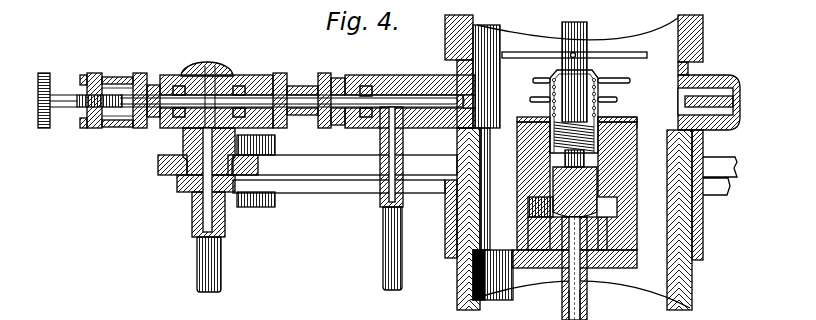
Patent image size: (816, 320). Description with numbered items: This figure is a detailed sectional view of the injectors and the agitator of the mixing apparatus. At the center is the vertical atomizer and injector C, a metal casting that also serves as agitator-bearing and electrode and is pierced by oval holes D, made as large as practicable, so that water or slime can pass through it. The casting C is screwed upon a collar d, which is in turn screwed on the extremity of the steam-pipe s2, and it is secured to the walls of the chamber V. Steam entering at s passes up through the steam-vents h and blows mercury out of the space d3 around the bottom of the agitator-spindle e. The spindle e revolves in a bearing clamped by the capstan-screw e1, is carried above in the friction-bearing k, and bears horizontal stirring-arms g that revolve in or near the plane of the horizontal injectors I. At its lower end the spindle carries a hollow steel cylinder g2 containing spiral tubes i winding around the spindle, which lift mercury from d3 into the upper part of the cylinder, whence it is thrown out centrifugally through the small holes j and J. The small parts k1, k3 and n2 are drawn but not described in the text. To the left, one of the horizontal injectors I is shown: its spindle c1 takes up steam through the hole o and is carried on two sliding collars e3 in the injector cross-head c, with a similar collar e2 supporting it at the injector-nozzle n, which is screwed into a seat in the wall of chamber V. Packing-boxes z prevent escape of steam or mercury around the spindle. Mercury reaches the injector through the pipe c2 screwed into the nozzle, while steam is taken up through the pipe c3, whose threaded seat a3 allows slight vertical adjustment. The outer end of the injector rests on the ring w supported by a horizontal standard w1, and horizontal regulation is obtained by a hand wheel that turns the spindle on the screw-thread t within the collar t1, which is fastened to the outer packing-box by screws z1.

The horizontal standard w1 is at (38, 100).
The screw-thread t is at (85, 108).
The collar t1 is at (93, 82).
The screw z1 is at (118, 77).
The packing-box z is at (232, 92).
The horizontal injector I is at (450, 82).
The injector cross-head c is at (206, 66).
The hole o is at (219, 92).
The spindle c1 is at (301, 99).
The sliding collar e3 is at (178, 86).
The collar e2 is at (370, 86).
The injector-nozzle n is at (414, 80).
The ring w is at (180, 183).
The screw-thread and seat a3 is at (224, 210).
The steam pipe c3 is at (208, 268).
The mercury supply pipe c2 is at (384, 257).
The oval hole D is at (591, 162).
The chamber V is at (577, 36).
The agitator-spindle e is at (580, 38).
The friction-bearing k is at (530, 118).
The hollow steel cylinder g2 is at (541, 71).
The horizontal stirring-arm g is at (612, 80).
The small hole J is at (538, 93).
The small hole j is at (612, 96).
The spiral tube i is at (607, 109).
The seat ring k1 is at (627, 107).
The vertical atomizer and injector C is at (638, 135).
The steam-vent h is at (522, 155).
The mercury space d3 is at (597, 170).
The valve neck k3 is at (586, 173).
The collar d is at (574, 218).
The capstan-screw e1 is at (606, 211).
The port n2 is at (540, 207).
The steam inlet s is at (574, 268).
The steam-pipe s2 is at (586, 303).